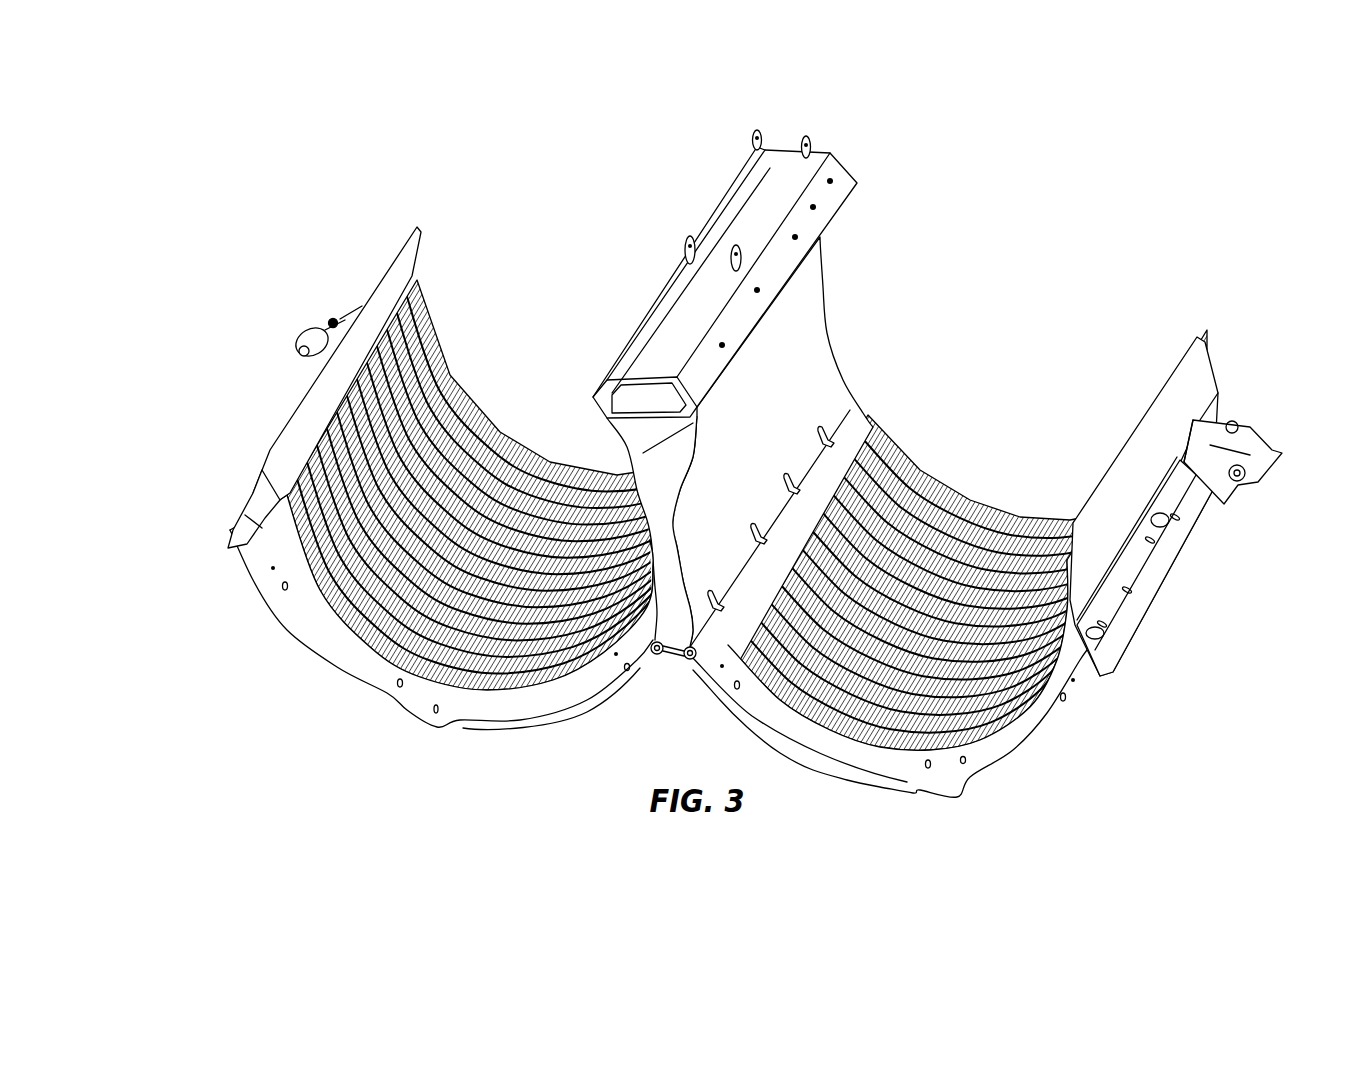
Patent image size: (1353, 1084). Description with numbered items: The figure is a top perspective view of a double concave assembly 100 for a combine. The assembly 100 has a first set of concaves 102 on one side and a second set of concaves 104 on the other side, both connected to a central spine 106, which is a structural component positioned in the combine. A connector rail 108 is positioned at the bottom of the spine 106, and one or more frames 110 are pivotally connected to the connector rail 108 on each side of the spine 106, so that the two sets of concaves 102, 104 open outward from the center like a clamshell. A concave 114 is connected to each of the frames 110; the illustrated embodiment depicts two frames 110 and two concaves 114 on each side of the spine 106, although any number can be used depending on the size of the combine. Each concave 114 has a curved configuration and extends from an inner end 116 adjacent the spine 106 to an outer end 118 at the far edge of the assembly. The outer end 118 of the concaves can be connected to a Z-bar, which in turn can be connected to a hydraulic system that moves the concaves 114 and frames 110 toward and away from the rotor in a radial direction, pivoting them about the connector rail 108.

The double concave assembly 100 is at (500, 157).
The first set of concaves 102 is at (297, 747).
The second set of concaves 104 is at (1117, 868).
The central spine 106 is at (830, 328).
The connector rail 108 is at (705, 658).
The frame 110 is at (515, 727).
The concave 114 is at (273, 603).
The inner end 116 is at (378, 253).
The outer end 118 is at (230, 533).